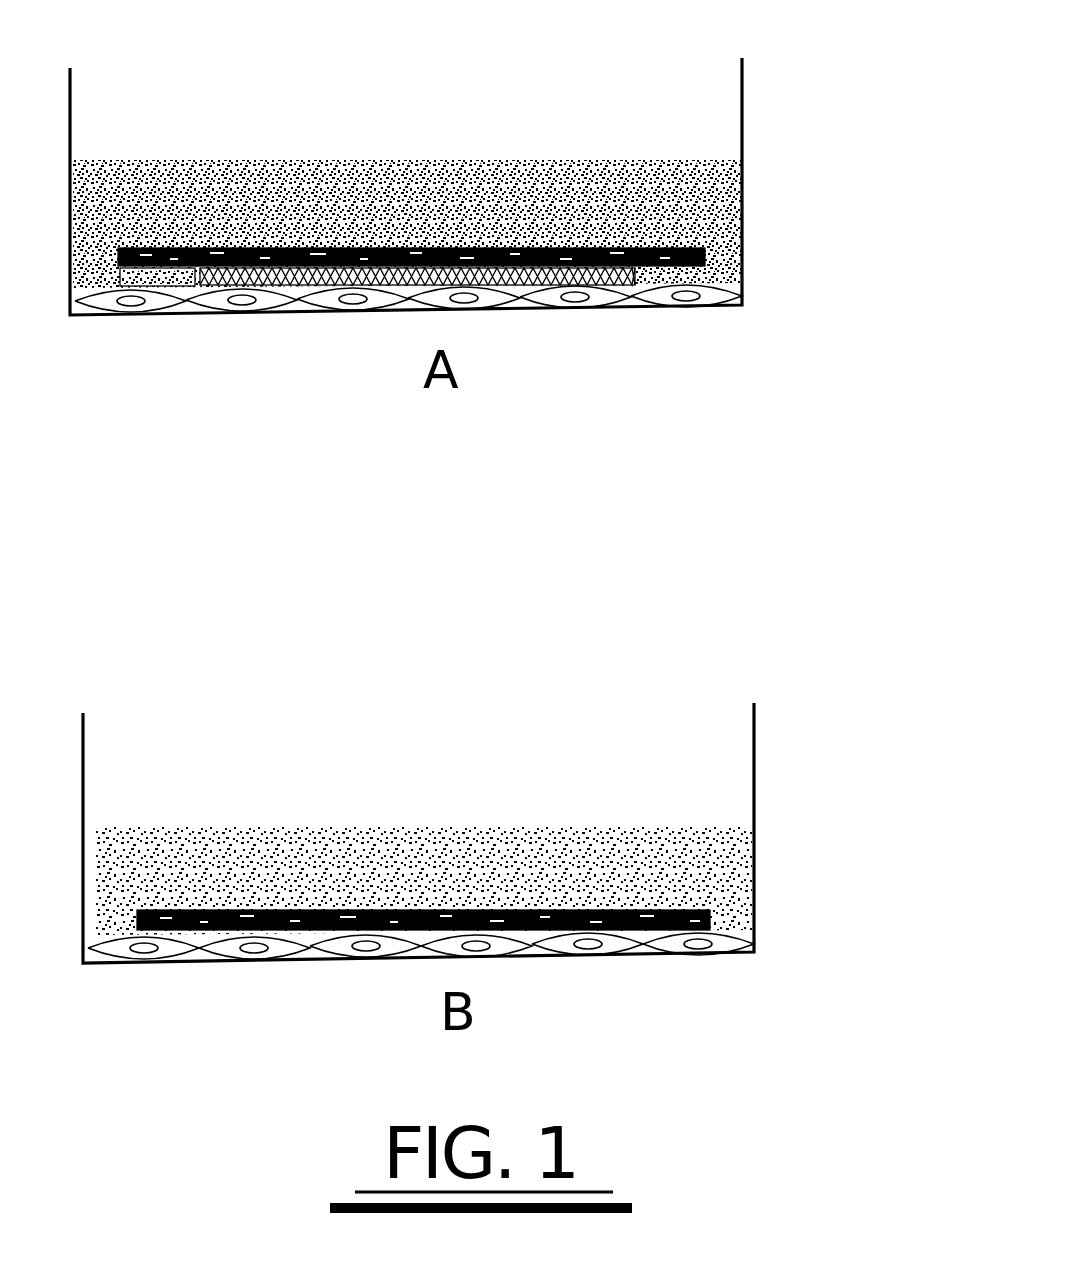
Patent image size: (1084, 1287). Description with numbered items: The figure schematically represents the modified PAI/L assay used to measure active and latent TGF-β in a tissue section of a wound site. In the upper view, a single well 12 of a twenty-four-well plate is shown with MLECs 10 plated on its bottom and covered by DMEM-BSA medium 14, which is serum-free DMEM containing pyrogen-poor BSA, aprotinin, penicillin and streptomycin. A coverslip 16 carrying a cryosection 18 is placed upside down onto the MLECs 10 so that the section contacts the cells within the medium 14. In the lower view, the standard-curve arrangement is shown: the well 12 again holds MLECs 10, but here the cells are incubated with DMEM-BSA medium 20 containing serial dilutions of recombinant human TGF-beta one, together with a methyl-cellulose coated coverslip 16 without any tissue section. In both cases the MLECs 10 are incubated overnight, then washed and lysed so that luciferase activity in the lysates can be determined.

In FIG. 1A, the MLECs 10 is at (743, 303).
In FIG. 1B, the MLECs 10 is at (757, 952).
In FIG. 1A, the well 12 is at (742, 82).
In FIG. 1B, the well 12 is at (757, 718).
In FIG. 1A, the DMEM-BSA medium 14 is at (690, 187).
In FIG. 1A, the coverslips 16 is at (702, 250).
In FIG. 1B, the coverslips 16 is at (717, 908).
In FIG. 1A, the cryosections 18 is at (643, 273).
In FIG. 1B, the DMEM-BSA medium 20 is at (715, 855).